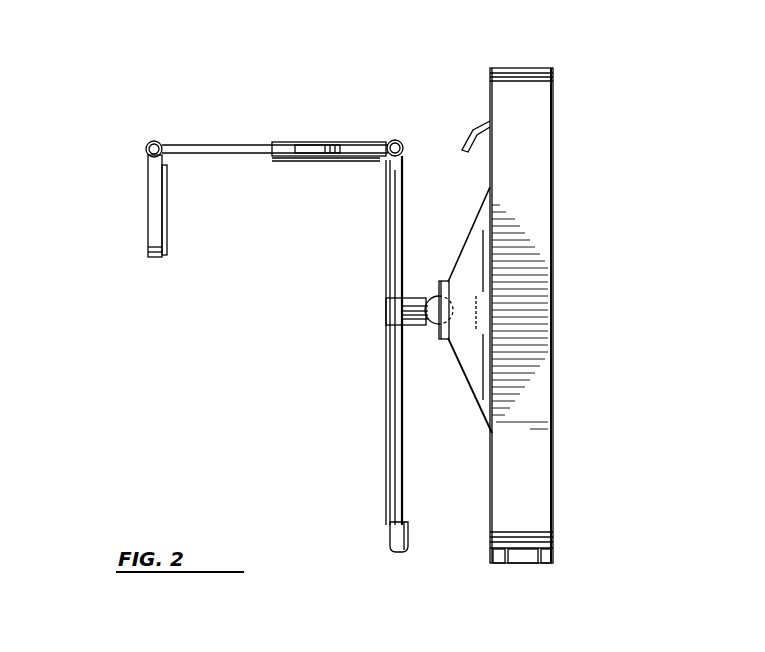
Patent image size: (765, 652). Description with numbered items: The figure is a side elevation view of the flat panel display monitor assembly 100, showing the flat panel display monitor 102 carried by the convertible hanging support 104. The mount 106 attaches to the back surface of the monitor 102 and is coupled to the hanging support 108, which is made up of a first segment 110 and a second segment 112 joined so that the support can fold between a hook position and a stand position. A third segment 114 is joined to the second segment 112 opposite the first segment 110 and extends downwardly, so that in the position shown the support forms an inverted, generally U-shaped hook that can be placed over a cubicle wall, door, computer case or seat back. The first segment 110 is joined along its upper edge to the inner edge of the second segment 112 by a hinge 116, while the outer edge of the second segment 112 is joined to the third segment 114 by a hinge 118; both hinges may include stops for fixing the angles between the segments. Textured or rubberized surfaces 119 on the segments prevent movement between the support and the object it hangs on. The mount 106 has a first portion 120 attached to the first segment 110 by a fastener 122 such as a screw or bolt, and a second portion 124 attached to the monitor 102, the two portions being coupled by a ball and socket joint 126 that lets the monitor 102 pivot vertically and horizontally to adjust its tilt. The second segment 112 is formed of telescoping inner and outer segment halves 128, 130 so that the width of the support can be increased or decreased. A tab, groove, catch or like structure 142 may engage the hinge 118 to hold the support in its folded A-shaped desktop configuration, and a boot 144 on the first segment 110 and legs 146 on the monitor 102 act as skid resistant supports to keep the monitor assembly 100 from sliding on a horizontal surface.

The monitor assembly 100 is at (580, 132).
The flat panel display monitor 102 is at (514, 209).
The convertible hanging support 104 is at (200, 143).
The mount 106 is at (450, 336).
The hanging support 108 is at (390, 390).
The first segment 110 is at (396, 438).
The second segment 112 is at (182, 145).
The third segment 114 is at (150, 198).
The hinge 116 is at (395, 141).
The hinge 118 is at (146, 146).
The textured or rubberized surfaces 119 is at (165, 210).
The first portion 120 is at (416, 300).
The fastener 122 is at (386, 308).
The second portion 124 is at (442, 312).
The ball and socket joint 126 is at (436, 320).
The inner segment half 128 is at (233, 144).
The outer segment half 130 is at (354, 141).
The tab, groove, catch or like structure 142 is at (474, 133).
The boot 144 is at (396, 540).
The legs 146 is at (522, 566).